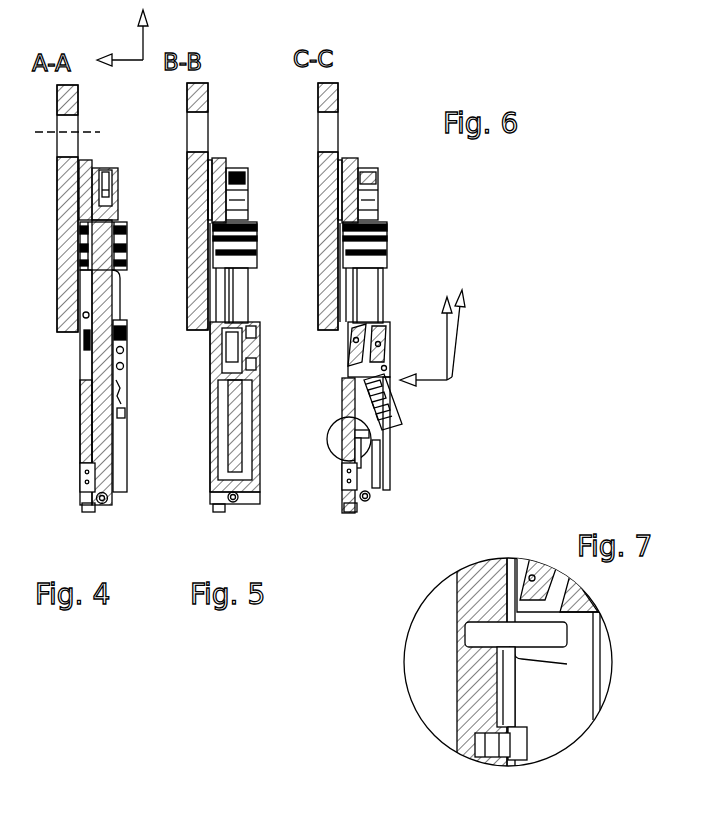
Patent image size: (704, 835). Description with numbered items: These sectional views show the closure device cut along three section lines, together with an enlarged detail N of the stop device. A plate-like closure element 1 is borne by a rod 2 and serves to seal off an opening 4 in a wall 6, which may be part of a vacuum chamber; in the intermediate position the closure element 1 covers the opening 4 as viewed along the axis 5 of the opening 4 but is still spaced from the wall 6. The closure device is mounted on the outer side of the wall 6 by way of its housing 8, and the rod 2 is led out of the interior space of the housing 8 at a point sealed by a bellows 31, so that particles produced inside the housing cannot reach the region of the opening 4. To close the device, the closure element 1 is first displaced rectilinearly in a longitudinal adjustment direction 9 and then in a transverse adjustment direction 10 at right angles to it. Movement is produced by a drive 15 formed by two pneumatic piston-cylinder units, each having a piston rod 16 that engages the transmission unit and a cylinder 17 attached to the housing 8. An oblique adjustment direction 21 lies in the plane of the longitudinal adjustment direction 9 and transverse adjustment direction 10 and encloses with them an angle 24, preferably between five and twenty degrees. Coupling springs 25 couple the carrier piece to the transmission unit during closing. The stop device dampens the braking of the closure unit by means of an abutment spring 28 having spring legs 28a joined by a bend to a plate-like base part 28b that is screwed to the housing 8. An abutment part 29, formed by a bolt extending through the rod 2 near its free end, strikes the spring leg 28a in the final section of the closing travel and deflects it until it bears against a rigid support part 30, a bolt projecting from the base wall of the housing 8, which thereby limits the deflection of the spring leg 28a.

In FIG. 4, the closure element 1 is at (90, 162).
In FIG. 5, the closure element 1 is at (222, 162).
In FIG. 6, the closure element 1 is at (352, 162).
In FIG. 4, the rod 2 is at (100, 283).
In FIG. 6, the rod 2 is at (368, 288).
In FIG. 4, the opening 4 is at (73, 118).
In FIG. 5, the opening 4 is at (200, 112).
In FIG. 6, the opening 4 is at (330, 112).
In FIG. 4, the axis of the opening 5 is at (43, 130).
In FIG. 4, the wall 6 is at (62, 207).
In FIG. 5, the wall 6 is at (195, 83).
In FIG. 6, the wall 6 is at (325, 83).
In FIG. 4, the housing 8 is at (82, 443).
In FIG. 7, the housing 8 is at (475, 675).
In FIG. 4, the longitudinal adjustment direction 9 is at (147, 43).
In FIG. 6, the longitudinal adjustment direction 9 is at (445, 333).
In FIG. 4, the transverse adjustment direction 10 is at (123, 60).
In FIG. 6, the transverse adjustment direction 10 is at (427, 382).
In FIG. 5, the drive 15 is at (262, 495).
In FIG. 5, the piston rod 16 is at (232, 405).
In FIG. 5, the cylinder 17 is at (213, 460).
In FIG. 6, the oblique adjustment direction 21 is at (460, 327).
In FIG. 6, the angle 24 is at (453, 352).
In FIG. 6, the springs 25 is at (378, 395).
In FIG. 7, the abutment spring 28 is at (492, 710).
In FIG. 7, the spring leg 28a is at (563, 658).
In FIG. 7, the plate-like base part 28b is at (506, 688).
In FIG. 4, the abutment part 29 is at (104, 505).
In FIG. 5, the abutment part 29 is at (235, 505).
In FIG. 6, the abutment part 29 is at (370, 505).
In FIG. 7, the support part 30 is at (542, 633).
In FIG. 4, the bellows 31 is at (122, 225).
In FIG. 6, the detail N is at (380, 463).